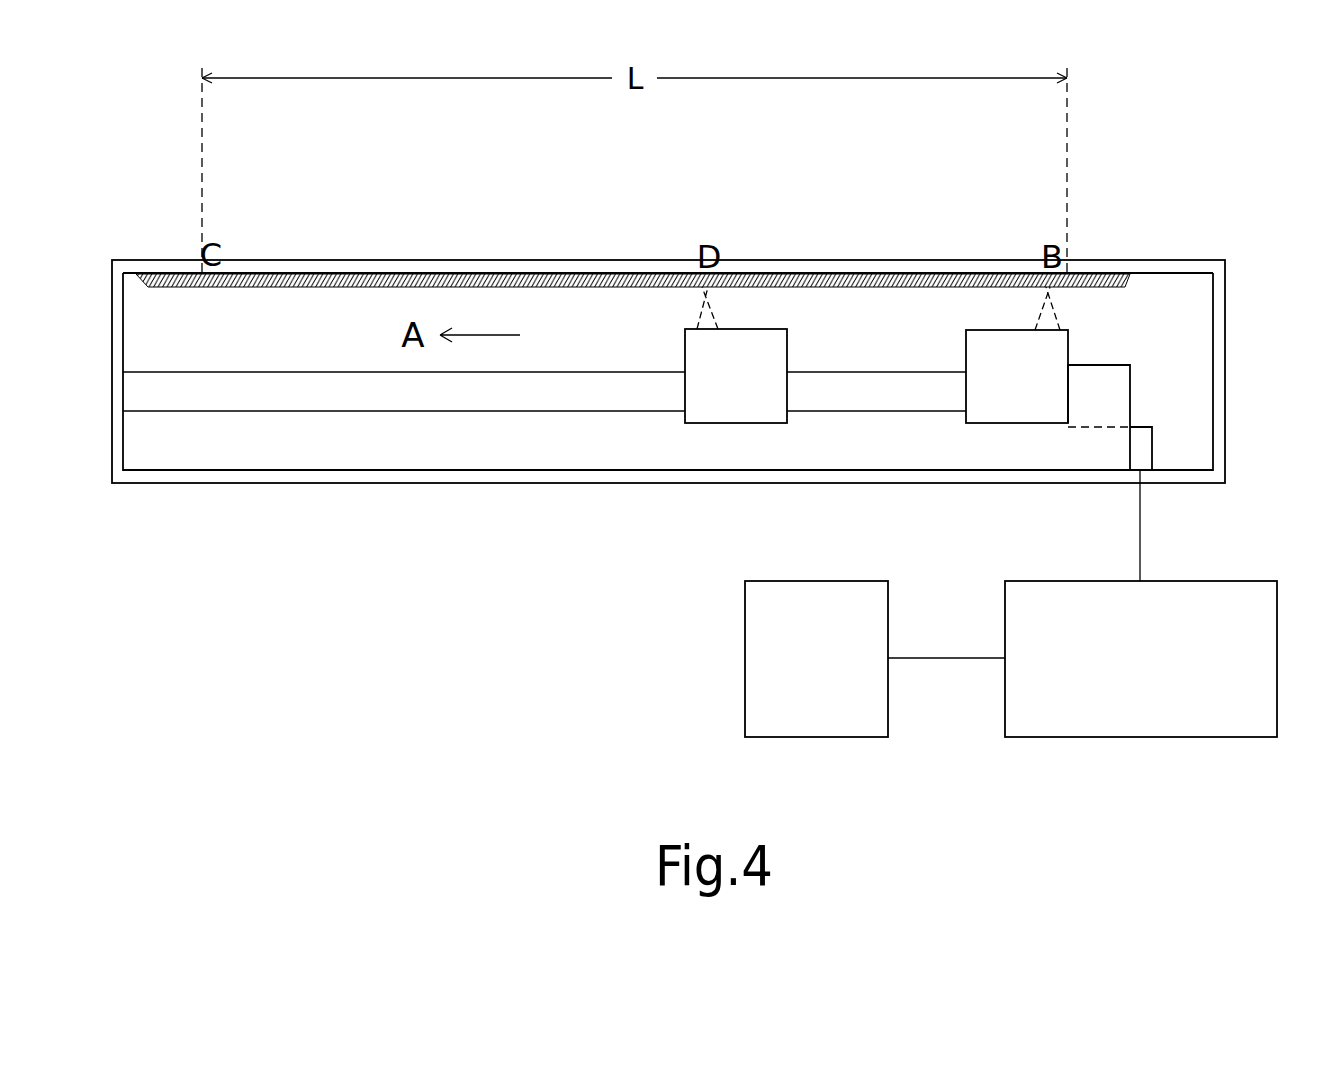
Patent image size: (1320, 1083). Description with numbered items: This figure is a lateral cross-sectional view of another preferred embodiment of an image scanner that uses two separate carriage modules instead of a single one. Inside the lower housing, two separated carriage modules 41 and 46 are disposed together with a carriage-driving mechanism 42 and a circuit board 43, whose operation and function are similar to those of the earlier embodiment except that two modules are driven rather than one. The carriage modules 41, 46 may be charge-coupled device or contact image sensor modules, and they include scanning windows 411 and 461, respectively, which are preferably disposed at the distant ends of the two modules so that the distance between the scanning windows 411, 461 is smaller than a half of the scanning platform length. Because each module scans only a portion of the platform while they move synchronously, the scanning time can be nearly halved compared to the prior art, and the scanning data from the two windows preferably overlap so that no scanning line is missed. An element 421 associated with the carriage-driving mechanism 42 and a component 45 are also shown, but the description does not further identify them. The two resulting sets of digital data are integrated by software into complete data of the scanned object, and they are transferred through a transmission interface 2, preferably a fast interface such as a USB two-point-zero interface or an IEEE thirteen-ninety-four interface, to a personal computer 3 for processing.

The transmission interface 2 is at (1255, 710).
The personal computer 3 is at (867, 710).
The carriage module 41 is at (1022, 350).
The scanning window 411 is at (1075, 270).
The carriage-driving mechanism 42 is at (1123, 340).
The control circuit 421 is at (1112, 395).
The circuit board 43 is at (1143, 458).
The document 45 is at (730, 273).
The carriage module 46 is at (748, 350).
The scanning window 461 is at (693, 277).